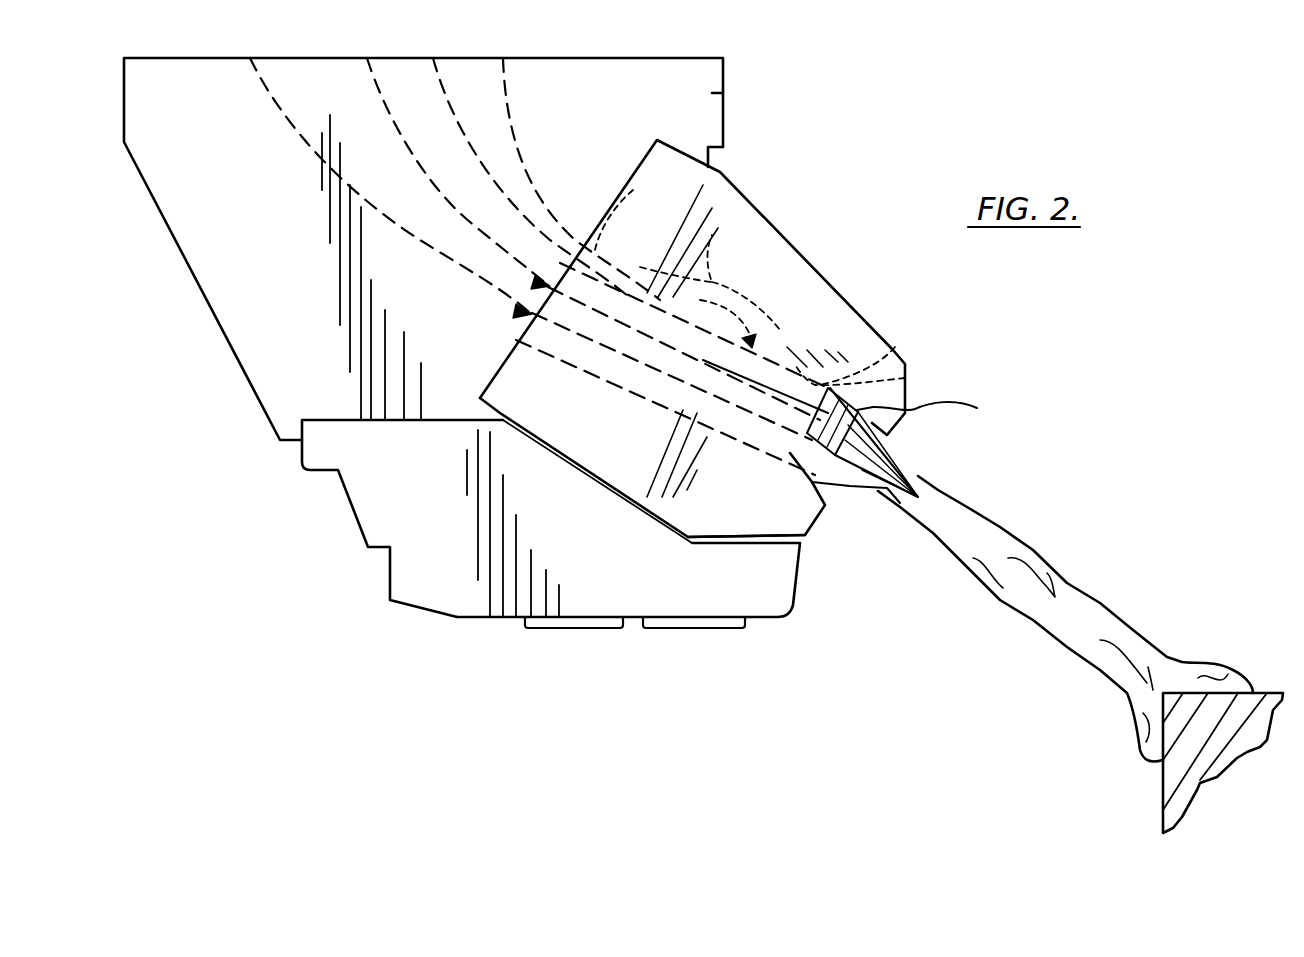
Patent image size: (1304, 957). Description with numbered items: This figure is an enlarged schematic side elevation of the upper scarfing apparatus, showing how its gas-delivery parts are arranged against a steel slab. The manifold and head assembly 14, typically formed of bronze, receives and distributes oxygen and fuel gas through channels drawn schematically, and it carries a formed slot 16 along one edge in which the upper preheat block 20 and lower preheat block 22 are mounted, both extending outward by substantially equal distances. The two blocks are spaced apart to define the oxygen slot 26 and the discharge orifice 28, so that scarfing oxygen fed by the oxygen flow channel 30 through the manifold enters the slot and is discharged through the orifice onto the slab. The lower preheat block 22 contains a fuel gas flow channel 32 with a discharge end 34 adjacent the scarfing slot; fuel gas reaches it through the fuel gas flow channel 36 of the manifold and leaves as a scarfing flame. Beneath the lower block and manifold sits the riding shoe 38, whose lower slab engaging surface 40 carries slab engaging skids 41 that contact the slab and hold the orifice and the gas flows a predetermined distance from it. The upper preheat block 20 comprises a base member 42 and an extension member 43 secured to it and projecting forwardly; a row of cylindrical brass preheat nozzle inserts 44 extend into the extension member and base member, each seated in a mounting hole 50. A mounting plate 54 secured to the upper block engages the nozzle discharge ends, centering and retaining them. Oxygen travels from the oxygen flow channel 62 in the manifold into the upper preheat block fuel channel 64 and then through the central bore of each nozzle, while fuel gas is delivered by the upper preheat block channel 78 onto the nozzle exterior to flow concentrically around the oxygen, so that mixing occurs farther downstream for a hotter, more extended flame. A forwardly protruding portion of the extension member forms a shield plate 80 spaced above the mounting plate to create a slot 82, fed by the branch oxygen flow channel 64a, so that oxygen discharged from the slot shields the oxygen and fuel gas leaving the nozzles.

The manifold and head assembly 14 is at (330, 58).
The formed slot 16 is at (723, 93).
The upper preheat block 20 is at (783, 232).
The lower preheat block 22 is at (768, 510).
The oxygen slot 26 is at (650, 357).
The discharge orifice 28 is at (867, 477).
The oxygen flow channel 30 is at (380, 116).
The fuel gas flow channel 32 is at (765, 455).
The discharge end 34 is at (815, 483).
The fuel gas flow channel 36 is at (290, 128).
The riding shoe 38 is at (363, 525).
The lower slab engaging surface 40 is at (492, 617).
The slab engaging skids 41 is at (607, 630).
The base member 42 is at (720, 172).
The extension member 43 is at (845, 297).
The preheat nozzle insert 44 is at (778, 335).
The mounting hole 50 is at (905, 378).
The mounting plate 54 is at (890, 428).
The oxygen flow channel 62 is at (512, 110).
The upper preheat block fuel channel 64 is at (631, 209).
The oxygen flow channel 64a is at (710, 272).
The upper preheat block channel 78 is at (448, 108).
The shield plate 80 is at (895, 347).
The slot 82 is at (934, 406).